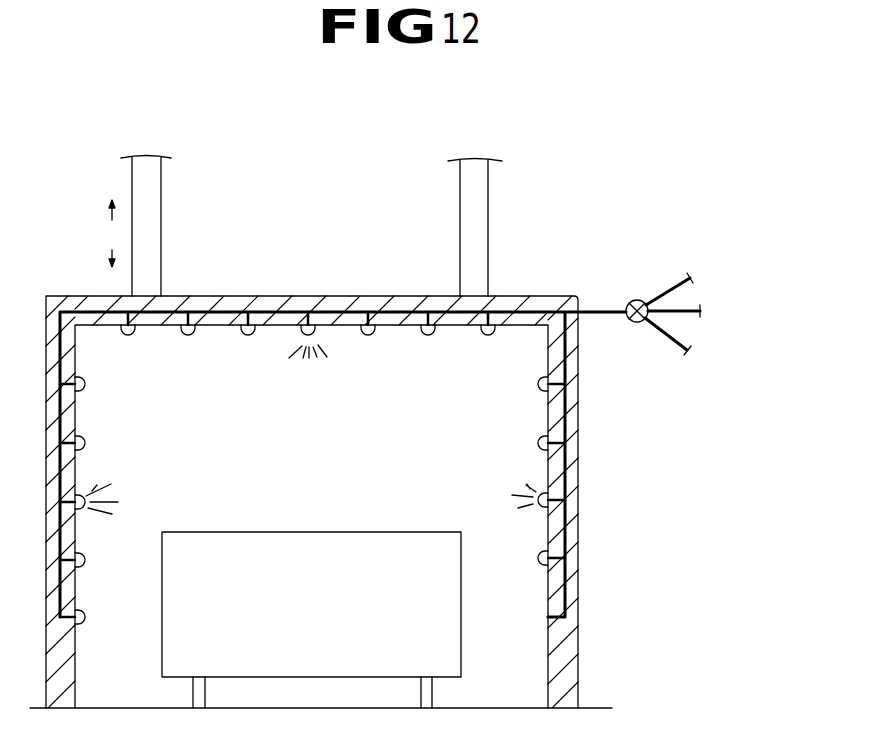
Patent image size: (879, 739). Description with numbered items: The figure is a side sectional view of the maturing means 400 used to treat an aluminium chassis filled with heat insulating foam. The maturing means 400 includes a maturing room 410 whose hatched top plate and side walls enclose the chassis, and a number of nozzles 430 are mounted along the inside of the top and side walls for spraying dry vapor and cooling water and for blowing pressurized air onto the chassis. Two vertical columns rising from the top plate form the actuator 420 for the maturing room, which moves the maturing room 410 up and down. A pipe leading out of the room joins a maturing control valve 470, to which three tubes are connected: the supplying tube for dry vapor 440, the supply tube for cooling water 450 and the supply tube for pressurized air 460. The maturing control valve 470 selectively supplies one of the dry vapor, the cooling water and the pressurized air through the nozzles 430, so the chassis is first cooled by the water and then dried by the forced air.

The maturing means 400 is at (344, 137).
The maturing room 410 is at (234, 288).
The actuator for the maturing room 420 is at (487, 225).
The nozzle 430 is at (368, 339).
The supplying tube for dry vapor 440 is at (674, 279).
The supply tube for cooling water 450 is at (690, 303).
The supply tube for pressurized air 460 is at (676, 353).
The maturing control valve 470 is at (636, 323).